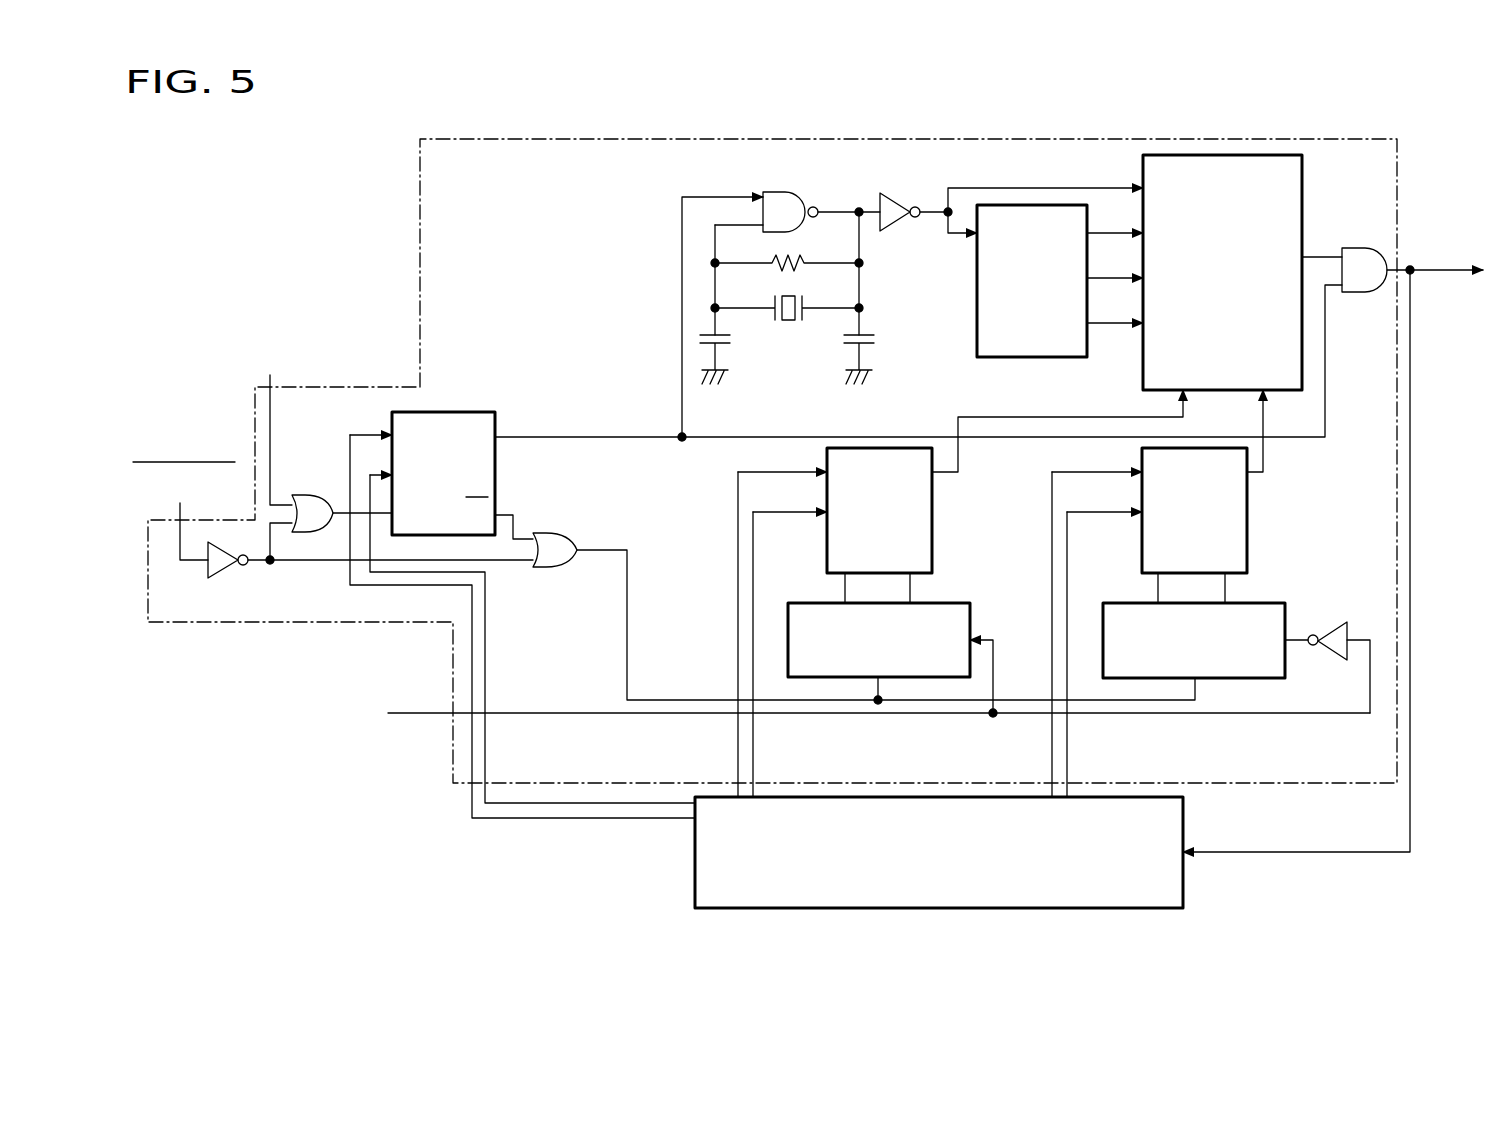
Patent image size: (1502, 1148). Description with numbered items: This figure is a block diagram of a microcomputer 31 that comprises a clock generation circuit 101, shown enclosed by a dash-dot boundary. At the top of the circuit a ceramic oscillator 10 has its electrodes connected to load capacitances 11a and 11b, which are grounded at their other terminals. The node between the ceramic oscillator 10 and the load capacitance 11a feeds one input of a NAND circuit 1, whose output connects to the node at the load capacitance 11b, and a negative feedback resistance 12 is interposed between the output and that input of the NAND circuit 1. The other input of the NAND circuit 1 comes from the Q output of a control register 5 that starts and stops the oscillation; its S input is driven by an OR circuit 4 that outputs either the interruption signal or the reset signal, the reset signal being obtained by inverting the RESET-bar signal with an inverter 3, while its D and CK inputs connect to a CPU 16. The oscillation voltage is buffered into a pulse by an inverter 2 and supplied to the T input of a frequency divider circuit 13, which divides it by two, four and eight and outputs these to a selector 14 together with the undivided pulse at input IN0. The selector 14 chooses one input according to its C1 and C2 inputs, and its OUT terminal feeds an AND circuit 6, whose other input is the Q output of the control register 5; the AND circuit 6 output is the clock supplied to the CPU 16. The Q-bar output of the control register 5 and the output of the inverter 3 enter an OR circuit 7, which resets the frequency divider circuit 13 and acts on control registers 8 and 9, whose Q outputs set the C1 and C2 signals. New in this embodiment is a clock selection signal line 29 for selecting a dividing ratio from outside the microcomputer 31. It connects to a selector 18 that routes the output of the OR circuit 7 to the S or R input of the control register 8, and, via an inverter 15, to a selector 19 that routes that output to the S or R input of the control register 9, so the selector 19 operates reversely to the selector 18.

The NAND circuit 1 is at (805, 200).
The inverter 2 is at (908, 228).
The inverter 3 is at (208, 572).
The OR circuit 4 is at (317, 492).
The control register 5 is at (467, 411).
The AND circuit 6 is at (1357, 295).
The OR circuit 7 is at (558, 531).
The control register 8 is at (934, 518).
The control register 9 is at (1249, 520).
The ceramic oscillator 10 is at (766, 301).
The load capacitance 11a is at (732, 340).
The load capacitance 11b is at (877, 340).
The negative feedback resistance 12 is at (798, 261).
The frequency divider circuit 13 is at (977, 298).
The selector 14 is at (1302, 172).
The inverter 15 is at (1330, 663).
The CPU 16 is at (1183, 828).
The selector 18 is at (966, 628).
The selector 19 is at (1282, 631).
The clock selection signal line 29 is at (427, 717).
The microcomputer 31 is at (338, 267).
The clock generation circuit 101 is at (418, 200).